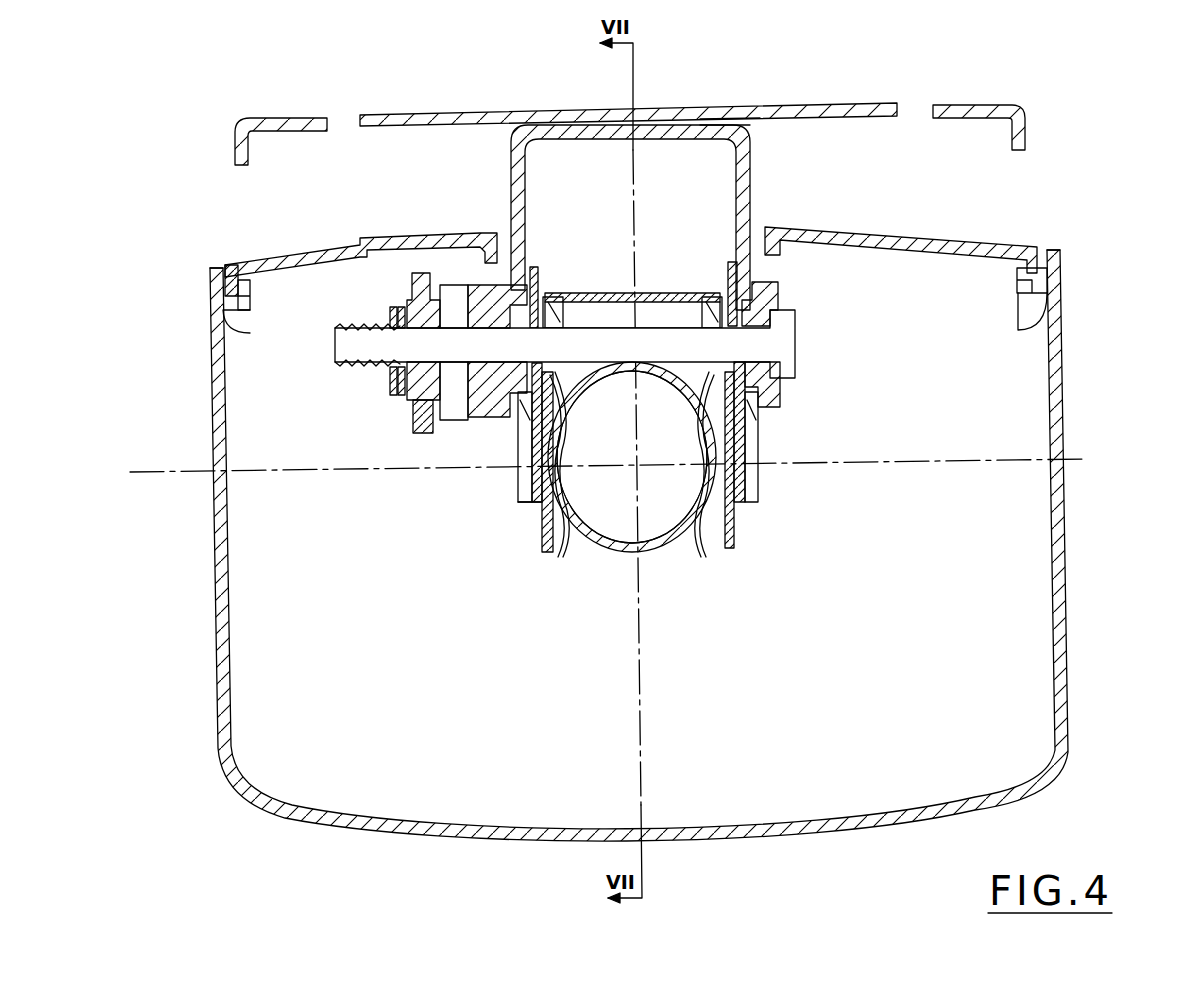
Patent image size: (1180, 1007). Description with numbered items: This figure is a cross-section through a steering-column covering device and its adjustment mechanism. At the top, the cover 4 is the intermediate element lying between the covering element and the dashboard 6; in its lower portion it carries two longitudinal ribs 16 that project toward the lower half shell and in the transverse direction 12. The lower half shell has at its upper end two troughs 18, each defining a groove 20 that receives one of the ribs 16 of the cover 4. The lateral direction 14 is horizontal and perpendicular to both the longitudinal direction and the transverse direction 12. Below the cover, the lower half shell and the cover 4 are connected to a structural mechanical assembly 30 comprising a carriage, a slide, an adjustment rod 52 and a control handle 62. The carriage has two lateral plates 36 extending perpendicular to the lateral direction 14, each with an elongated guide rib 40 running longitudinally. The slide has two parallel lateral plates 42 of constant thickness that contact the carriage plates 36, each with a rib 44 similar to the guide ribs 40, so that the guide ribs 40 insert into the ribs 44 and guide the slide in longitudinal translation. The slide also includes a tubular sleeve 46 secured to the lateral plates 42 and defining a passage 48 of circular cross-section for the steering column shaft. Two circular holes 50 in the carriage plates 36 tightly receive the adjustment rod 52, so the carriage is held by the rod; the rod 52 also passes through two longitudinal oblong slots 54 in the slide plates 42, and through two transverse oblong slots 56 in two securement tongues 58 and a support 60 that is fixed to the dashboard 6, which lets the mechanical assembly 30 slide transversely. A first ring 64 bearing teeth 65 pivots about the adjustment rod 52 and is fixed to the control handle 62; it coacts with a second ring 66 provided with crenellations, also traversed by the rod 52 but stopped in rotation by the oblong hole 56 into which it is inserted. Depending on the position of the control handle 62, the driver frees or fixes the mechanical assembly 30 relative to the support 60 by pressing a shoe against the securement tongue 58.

The cover 4 is at (967, 238).
The dashboard 6 is at (1027, 122).
The transverse direction 12 is at (633, 104).
The lateral direction 14 is at (1085, 460).
The longitudinal ribs 16 is at (215, 275).
The troughs 18 is at (235, 325).
The groove 20 is at (238, 300).
The structural mechanical assembly 30 is at (497, 506).
The lateral plates 36 is at (535, 505).
The guide rib 40 is at (517, 418).
The lateral plates 42 is at (553, 545).
The rib 44 is at (520, 430).
The tubular sleeve 46 is at (660, 552).
The passage 48 is at (637, 510).
The circular holes 50 is at (762, 410).
The adjustment rod 52 is at (785, 345).
The oblong holes or slots 54 is at (549, 322).
The oblong holes or slots 56 is at (530, 270).
The securement tongues 58 is at (511, 175).
The support 60 is at (727, 118).
The control handle 62 is at (415, 420).
The first ring 64 is at (417, 310).
The teeth 65 is at (456, 290).
The second ring 66 is at (491, 337).